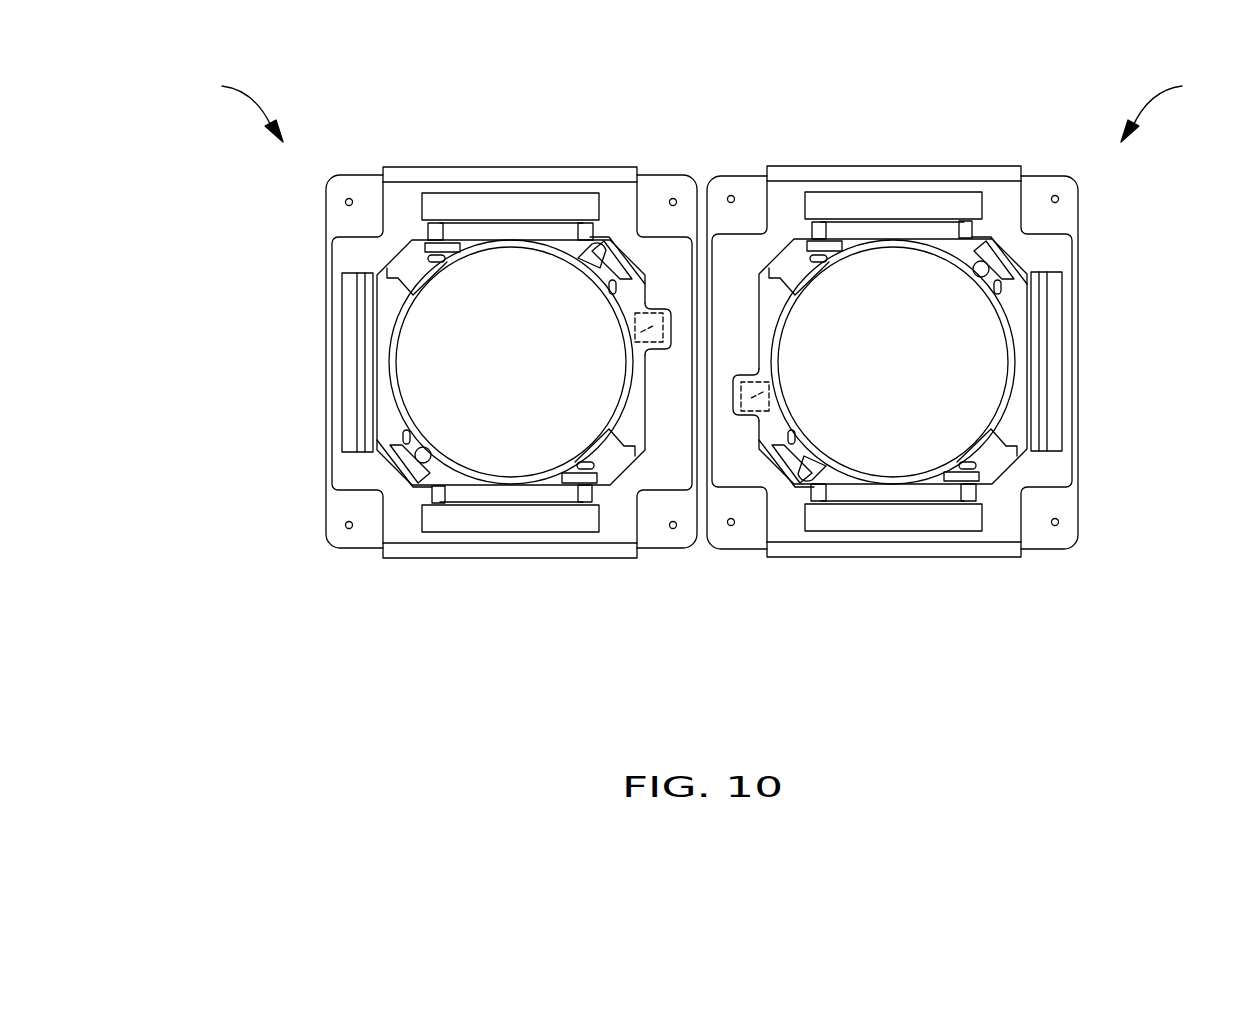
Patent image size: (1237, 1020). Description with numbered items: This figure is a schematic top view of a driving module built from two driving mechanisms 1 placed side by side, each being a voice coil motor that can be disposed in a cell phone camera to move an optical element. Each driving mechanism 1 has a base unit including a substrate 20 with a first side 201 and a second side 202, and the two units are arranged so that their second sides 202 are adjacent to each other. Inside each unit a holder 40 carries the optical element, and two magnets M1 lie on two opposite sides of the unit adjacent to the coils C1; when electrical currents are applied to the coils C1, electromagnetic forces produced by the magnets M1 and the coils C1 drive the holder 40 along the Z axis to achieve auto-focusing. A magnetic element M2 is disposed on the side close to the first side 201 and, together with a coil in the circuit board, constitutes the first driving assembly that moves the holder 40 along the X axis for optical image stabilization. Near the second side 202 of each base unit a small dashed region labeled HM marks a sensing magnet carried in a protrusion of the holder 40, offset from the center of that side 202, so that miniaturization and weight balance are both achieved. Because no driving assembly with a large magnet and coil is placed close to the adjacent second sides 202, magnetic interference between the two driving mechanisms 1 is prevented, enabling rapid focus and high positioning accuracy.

The driving mechanism 1 is at (702, 106).
The substrate 20 is at (365, 520).
The first side 201 is at (330, 505).
The second side 202 is at (703, 205).
The holder 40 is at (383, 408).
The magnet M1 is at (463, 212).
The magnetic element M2 is at (345, 298).
The coil C1 is at (541, 235).
The position sensing magnet HM is at (637, 330).